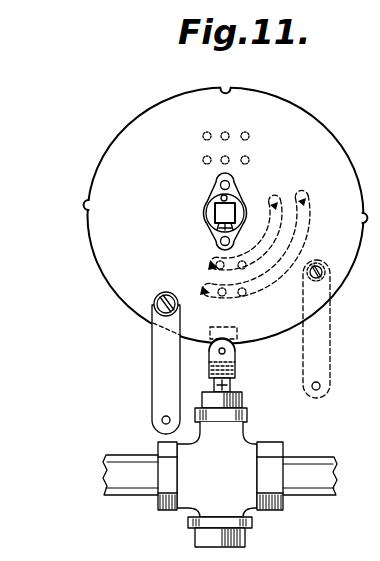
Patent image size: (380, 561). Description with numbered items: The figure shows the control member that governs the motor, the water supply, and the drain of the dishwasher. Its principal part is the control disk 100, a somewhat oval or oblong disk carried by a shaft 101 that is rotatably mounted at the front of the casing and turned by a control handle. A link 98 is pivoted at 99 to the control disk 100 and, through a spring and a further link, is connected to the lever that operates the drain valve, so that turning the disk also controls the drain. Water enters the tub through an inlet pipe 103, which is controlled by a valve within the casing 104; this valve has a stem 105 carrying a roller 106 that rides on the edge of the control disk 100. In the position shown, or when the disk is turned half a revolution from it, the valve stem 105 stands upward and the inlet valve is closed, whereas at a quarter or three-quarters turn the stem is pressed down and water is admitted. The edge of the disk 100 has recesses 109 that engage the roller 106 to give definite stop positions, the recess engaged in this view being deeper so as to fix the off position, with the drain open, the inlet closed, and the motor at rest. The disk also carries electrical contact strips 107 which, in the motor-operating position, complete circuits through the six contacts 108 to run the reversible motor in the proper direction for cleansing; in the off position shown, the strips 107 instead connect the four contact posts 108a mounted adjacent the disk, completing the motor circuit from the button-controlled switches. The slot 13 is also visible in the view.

The slot 13 is at (341, 329).
The link 98 is at (157, 383).
The pivot 99 is at (153, 306).
The control disk 100 is at (112, 256).
The shaft 101 is at (230, 208).
The inlet pipe 103 is at (118, 473).
The valve casing 104 is at (240, 442).
The valve stem 105 is at (230, 387).
The roller 106 is at (238, 350).
The electrical contacts 107 is at (212, 266).
The contacts 108 is at (202, 160).
The contact posts 108a is at (244, 272).
The recesses 109 is at (86, 207).